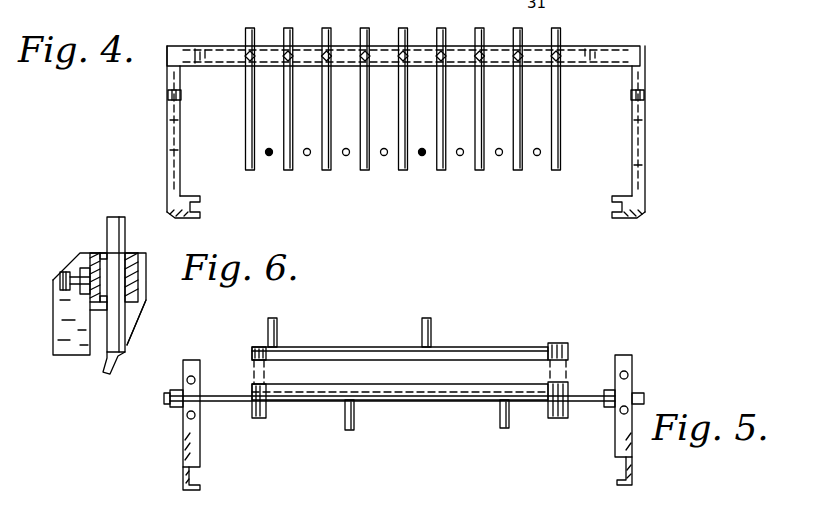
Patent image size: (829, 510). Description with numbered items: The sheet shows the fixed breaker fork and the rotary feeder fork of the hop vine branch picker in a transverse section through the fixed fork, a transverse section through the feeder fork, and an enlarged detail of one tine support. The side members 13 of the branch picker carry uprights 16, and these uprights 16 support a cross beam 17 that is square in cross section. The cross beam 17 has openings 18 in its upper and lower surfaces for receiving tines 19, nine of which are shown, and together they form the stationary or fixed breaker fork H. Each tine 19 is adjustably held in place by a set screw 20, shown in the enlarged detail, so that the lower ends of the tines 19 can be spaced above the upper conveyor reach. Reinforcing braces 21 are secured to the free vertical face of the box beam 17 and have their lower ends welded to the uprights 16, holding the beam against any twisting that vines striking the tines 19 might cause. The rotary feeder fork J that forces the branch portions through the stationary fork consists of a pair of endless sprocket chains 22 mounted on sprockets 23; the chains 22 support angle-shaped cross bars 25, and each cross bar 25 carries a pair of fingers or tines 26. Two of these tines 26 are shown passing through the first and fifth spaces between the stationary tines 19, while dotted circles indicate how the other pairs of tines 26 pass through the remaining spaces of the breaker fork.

In FIG. 4, the side members 13 is at (192, 208).
In FIG. 5, the side members 13 is at (196, 478).
In FIG. 4, the uprights 16 is at (167, 146).
In FIG. 6, the uprights 16 is at (53, 327).
In FIG. 4, the cross beam 17 is at (191, 47).
In FIG. 6, the cross beam 17 is at (137, 262).
In FIG. 6, the openings 18 is at (106, 254).
In FIG. 4, the tines 19 is at (361, 30).
In FIG. 6, the tines 19 is at (113, 217).
In FIG. 4, the set screws 20 is at (248, 60).
In FIG. 6, the set screws 20 is at (60, 278).
In FIG. 4, the reinforcing braces 21 is at (167, 98).
In FIG. 6, the reinforcing braces 21 is at (137, 320).
In FIG. 5, the endless sprocket chains 22 is at (252, 356).
In FIG. 5, the sprockets 23 is at (268, 412).
In FIG. 5, the cross bars 25 is at (512, 350).
In FIG. 4, the fingers or tines 26 is at (346, 156).
In FIG. 5, the fingers or tines 26 is at (278, 337).